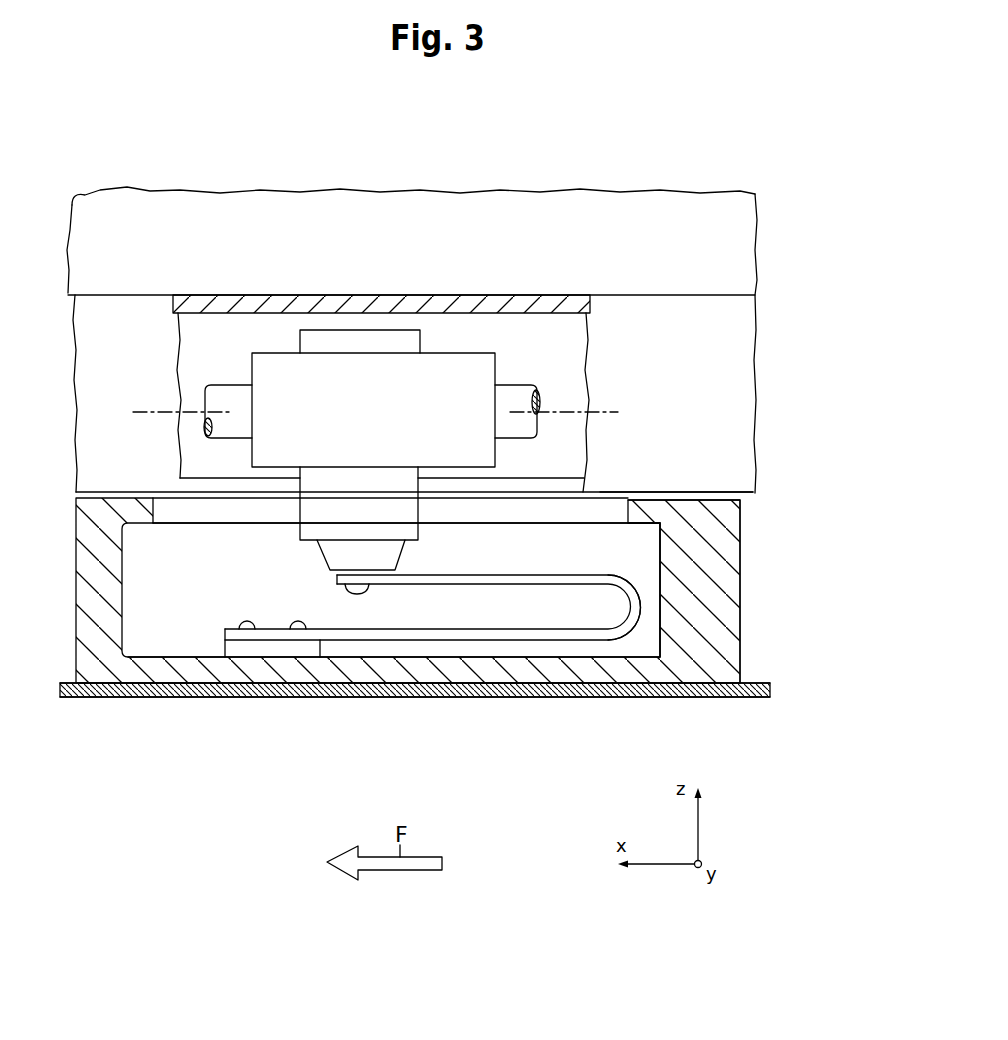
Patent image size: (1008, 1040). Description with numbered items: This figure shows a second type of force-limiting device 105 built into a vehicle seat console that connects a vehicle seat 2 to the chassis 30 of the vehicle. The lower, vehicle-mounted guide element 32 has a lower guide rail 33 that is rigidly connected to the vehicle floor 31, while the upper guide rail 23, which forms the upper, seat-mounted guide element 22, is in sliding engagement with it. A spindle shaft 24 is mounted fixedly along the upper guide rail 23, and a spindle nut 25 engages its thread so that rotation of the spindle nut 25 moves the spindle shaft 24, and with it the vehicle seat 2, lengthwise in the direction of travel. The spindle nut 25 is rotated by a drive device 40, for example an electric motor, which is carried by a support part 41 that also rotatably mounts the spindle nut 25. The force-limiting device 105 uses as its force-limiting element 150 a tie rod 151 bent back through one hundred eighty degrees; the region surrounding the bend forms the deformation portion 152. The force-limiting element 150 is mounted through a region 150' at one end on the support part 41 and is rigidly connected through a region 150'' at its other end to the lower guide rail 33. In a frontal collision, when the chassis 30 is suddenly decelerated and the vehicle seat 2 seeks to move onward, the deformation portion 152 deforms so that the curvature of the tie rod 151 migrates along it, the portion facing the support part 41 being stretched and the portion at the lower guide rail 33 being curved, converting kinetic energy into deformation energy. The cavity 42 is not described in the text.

The vehicle seat 2 is at (695, 226).
The upper, seat-mounted guide element 22 is at (765, 345).
The upper guide rail 23 is at (740, 437).
The spindle shaft 24 is at (517, 398).
The spindle nut 25 is at (445, 367).
The chassis 30 is at (121, 708).
The vehicle floor 31 is at (766, 690).
The lower, vehicle-mounted guide element 32 is at (754, 613).
The lower guide rail 33 is at (725, 537).
The drive device 40 is at (352, 497).
The support part 41 is at (386, 566).
The upper cavity 42 is at (234, 330).
The force-limiting device 105 is at (573, 551).
The force-limiting element 150 is at (402, 658).
The region at one end of the force-limiting element 150' is at (298, 573).
The region at the other end of the force-limiting element 150'' is at (234, 607).
The tie rod 151 is at (483, 584).
The deformation portion 152 is at (610, 653).